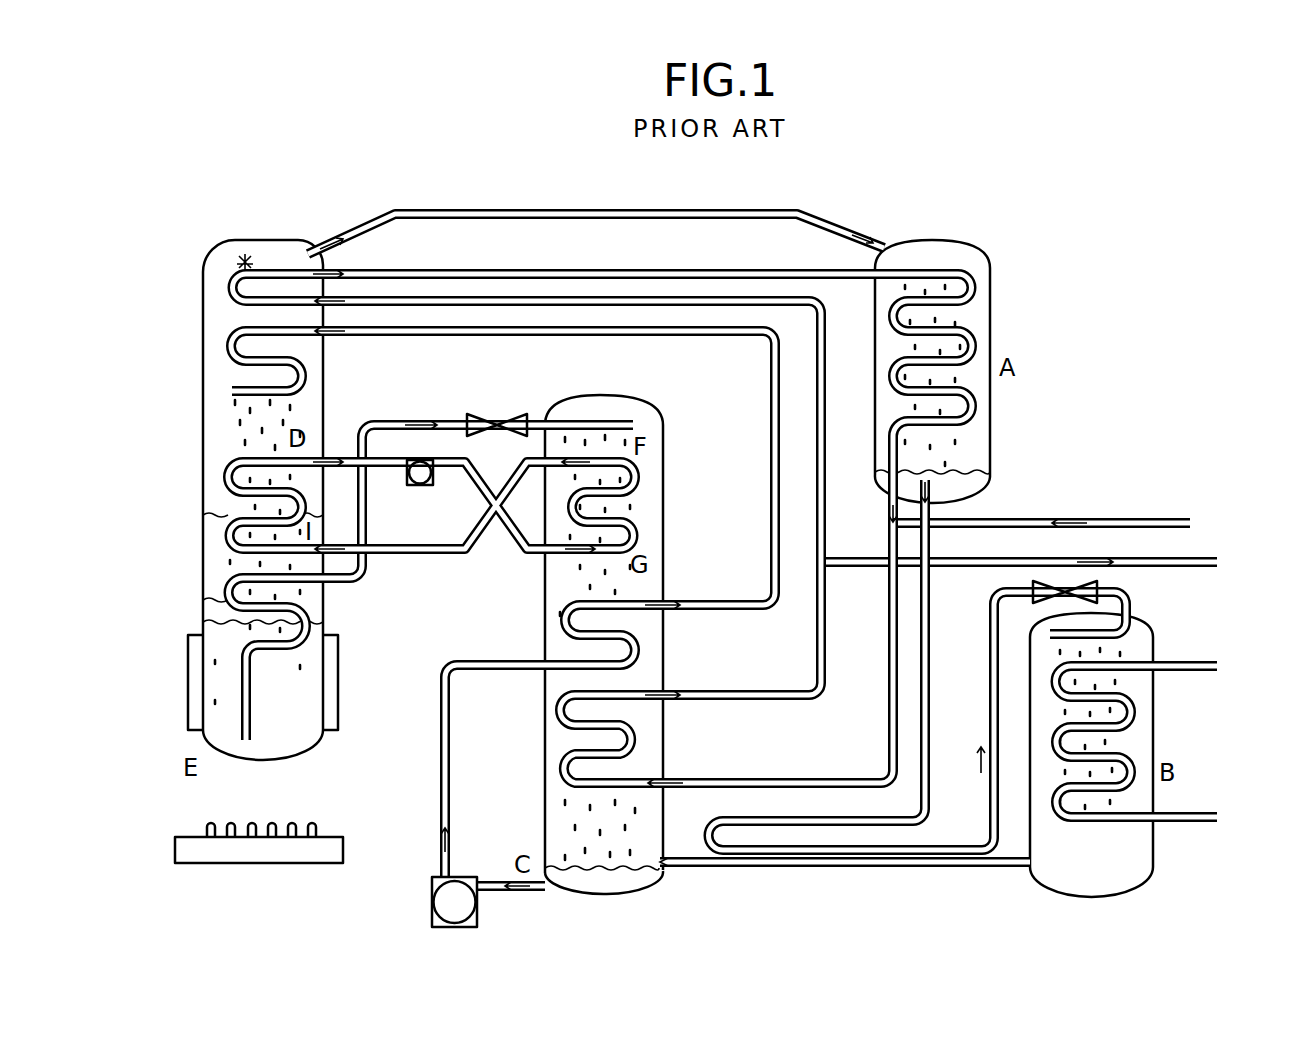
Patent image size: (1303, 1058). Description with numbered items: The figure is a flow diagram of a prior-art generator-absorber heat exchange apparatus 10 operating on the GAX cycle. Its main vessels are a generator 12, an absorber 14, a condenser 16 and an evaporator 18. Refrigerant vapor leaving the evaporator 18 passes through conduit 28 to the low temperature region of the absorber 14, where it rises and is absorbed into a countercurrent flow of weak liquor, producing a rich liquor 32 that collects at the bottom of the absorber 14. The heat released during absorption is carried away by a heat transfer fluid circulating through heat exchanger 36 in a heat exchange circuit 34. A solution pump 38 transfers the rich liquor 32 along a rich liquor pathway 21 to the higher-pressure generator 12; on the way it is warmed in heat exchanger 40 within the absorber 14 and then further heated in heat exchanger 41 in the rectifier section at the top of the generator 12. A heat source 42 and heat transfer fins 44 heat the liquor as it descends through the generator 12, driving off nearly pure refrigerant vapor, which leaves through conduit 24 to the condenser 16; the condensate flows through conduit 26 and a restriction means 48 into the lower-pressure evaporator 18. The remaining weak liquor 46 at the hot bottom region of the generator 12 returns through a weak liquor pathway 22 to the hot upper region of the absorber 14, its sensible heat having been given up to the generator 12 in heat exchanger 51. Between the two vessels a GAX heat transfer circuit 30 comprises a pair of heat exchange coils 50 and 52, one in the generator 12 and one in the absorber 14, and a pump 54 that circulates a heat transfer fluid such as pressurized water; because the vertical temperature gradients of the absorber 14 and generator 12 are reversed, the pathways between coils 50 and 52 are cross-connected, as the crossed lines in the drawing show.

The generator-absorber heat exchange apparatus 10 is at (507, 153).
The generator 12 is at (330, 391).
The absorber 14 is at (668, 541).
The condenser 16 is at (997, 256).
The evaporator 18 is at (1157, 852).
The rich liquor pathway 21 is at (511, 340).
The weak liquor pathway 22 is at (368, 503).
The conduit 24 is at (514, 224).
The conduit 26 is at (933, 641).
The conduit 28 is at (802, 870).
The heat transfer circuit 30 is at (478, 560).
The rich liquor 32 is at (597, 893).
The heat exchange circuit 34 is at (1221, 540).
The heat exchanger 36 is at (557, 738).
The solution pump 38 is at (452, 877).
The heat exchanger 40 is at (560, 625).
The heat exchanger 41 is at (228, 347).
The heat source 42 is at (345, 850).
The heat transfer fins 44 is at (340, 672).
The weak liquor 46 is at (297, 742).
The restriction means 48 is at (1027, 582).
The heat exchange coil 50 is at (228, 527).
The heat exchanger 51 is at (228, 597).
The heat exchange coil 52 is at (648, 480).
The pump 54 is at (423, 462).